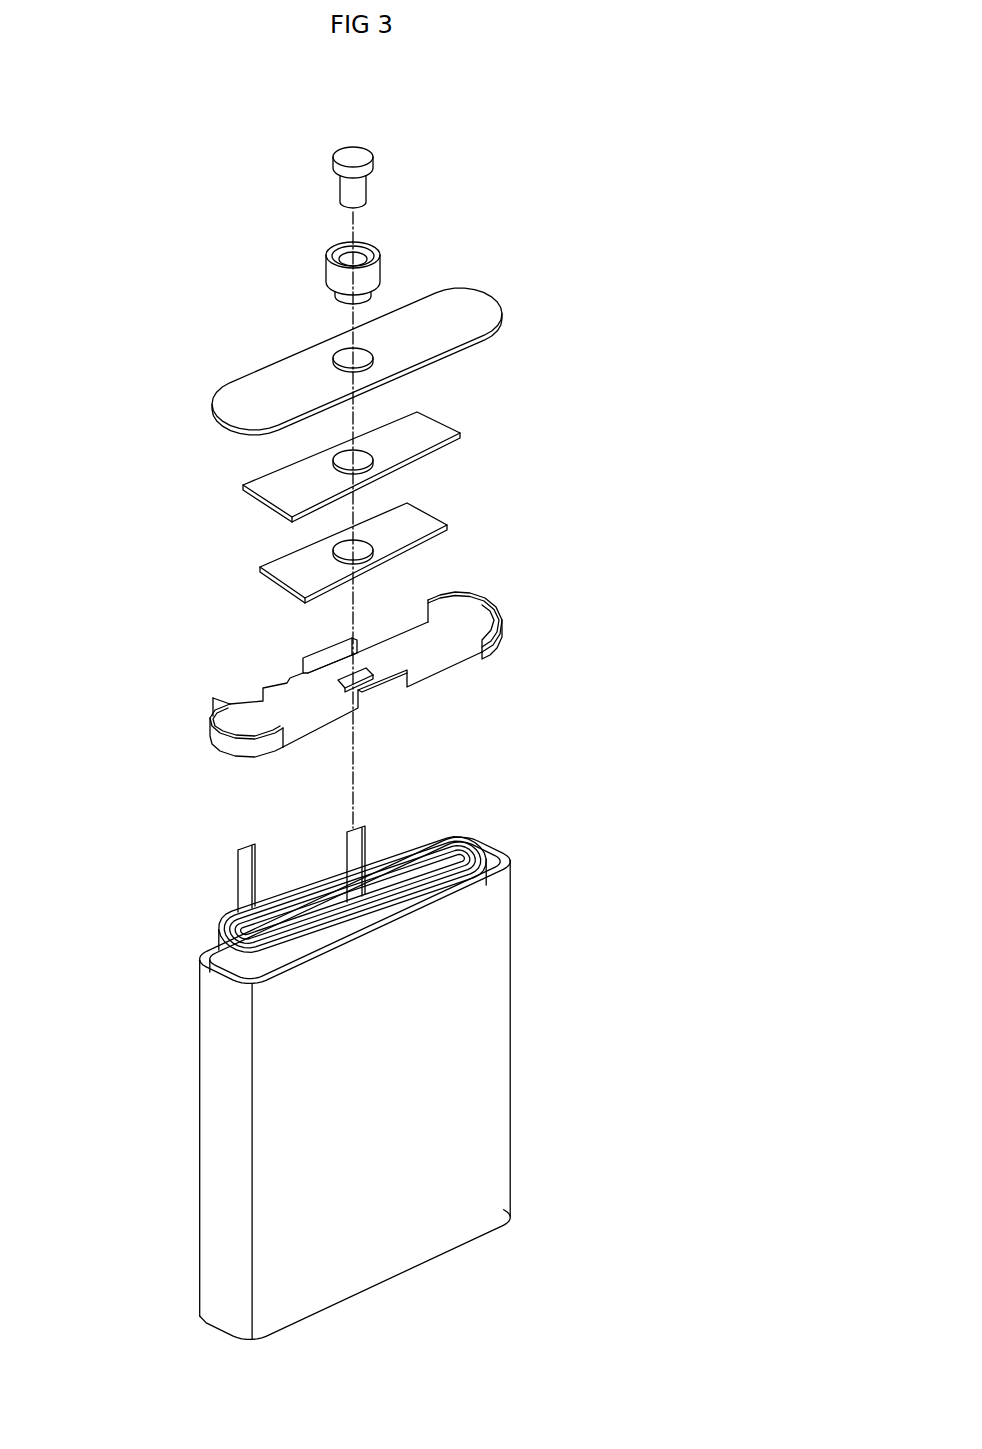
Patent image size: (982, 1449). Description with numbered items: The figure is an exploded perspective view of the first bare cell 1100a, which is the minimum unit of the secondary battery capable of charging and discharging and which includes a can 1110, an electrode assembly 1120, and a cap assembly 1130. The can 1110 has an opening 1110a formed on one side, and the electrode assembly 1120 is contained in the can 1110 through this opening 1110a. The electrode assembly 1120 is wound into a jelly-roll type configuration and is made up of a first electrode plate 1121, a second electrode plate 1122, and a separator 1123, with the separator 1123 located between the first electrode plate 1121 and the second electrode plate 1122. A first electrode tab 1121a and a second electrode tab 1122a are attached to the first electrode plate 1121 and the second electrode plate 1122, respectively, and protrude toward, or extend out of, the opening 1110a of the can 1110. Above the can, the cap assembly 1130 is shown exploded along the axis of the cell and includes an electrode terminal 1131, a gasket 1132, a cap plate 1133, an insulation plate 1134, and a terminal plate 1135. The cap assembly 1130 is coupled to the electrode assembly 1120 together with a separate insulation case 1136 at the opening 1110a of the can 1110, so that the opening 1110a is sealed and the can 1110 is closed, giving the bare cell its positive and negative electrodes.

The first bare cell 1100a is at (163, 115).
The can 1110 is at (547, 1003).
The opening 1110a is at (493, 868).
The electrode assembly 1120 is at (395, 842).
The first electrode plate 1121 is at (483, 842).
The first electrode tab 1121a is at (245, 872).
The second electrode plate 1122 is at (457, 843).
The second electrode tab 1122a is at (357, 852).
The separator 1123 is at (470, 845).
The cap assembly 1130 is at (563, 154).
The electrode terminal 1131 is at (351, 150).
The gasket 1132 is at (327, 252).
The cap plate 1133 is at (232, 383).
The insulation plate 1134 is at (435, 430).
The terminal plate 1135 is at (430, 520).
The insulation case 1136 is at (215, 729).